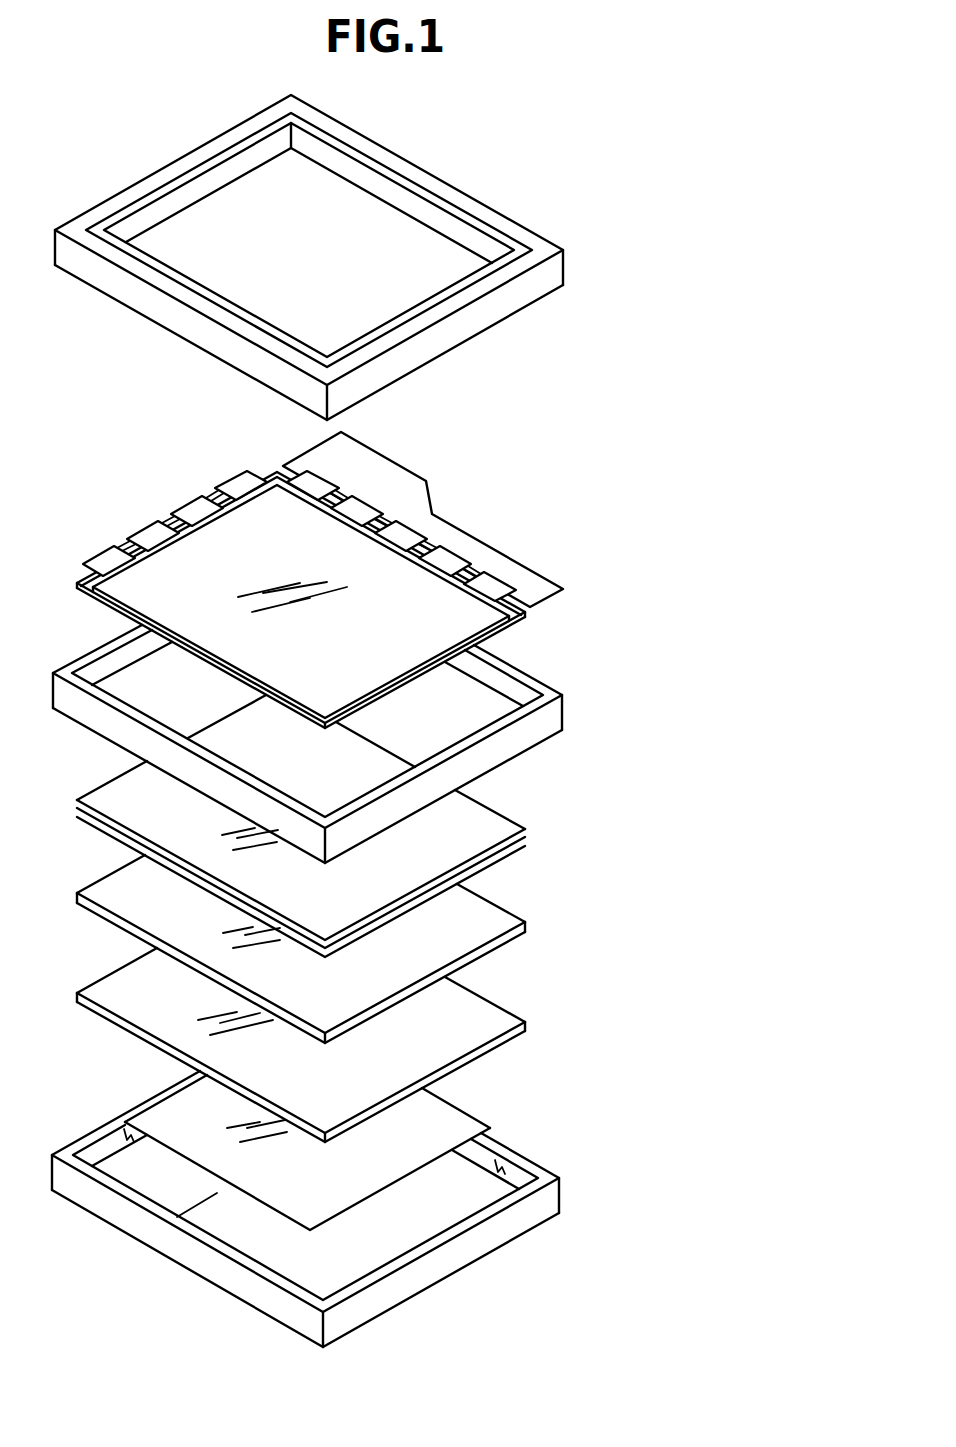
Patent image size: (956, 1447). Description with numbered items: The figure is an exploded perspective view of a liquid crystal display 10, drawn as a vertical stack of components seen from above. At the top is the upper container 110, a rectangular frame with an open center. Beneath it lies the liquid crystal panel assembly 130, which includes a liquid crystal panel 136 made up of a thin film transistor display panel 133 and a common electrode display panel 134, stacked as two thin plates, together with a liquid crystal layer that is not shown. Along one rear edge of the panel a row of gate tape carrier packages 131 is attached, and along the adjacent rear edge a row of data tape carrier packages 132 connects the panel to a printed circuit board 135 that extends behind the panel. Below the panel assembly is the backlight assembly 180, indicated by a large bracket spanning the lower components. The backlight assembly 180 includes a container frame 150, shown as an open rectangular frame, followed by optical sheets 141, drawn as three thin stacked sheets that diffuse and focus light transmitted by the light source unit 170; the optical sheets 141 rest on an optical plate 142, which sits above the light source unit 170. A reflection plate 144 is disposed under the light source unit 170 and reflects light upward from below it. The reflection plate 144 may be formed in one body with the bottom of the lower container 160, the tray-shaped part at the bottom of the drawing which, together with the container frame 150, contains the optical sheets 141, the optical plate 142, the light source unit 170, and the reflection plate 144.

The liquid crystal display 10 is at (549, 115).
The upper container 110 is at (551, 246).
The liquid crystal panel assembly 130 is at (552, 505).
The gate tape carrier packages 131 is at (152, 533).
The data tape carrier packages 132 is at (303, 480).
The thin film transistor display panel 133 is at (462, 624).
The common electrode display panel 134 is at (470, 647).
The printed circuit board 135 is at (383, 468).
The liquid crystal panel 136 is at (385, 600).
The optical sheets 141 is at (534, 826).
The optical plate 142 is at (500, 910).
The reflection plate 144 is at (470, 1117).
The container frame 150 is at (549, 717).
The lower container 160 is at (545, 1167).
The light source unit 170 is at (500, 1010).
The backlight assembly 180 is at (655, 713).